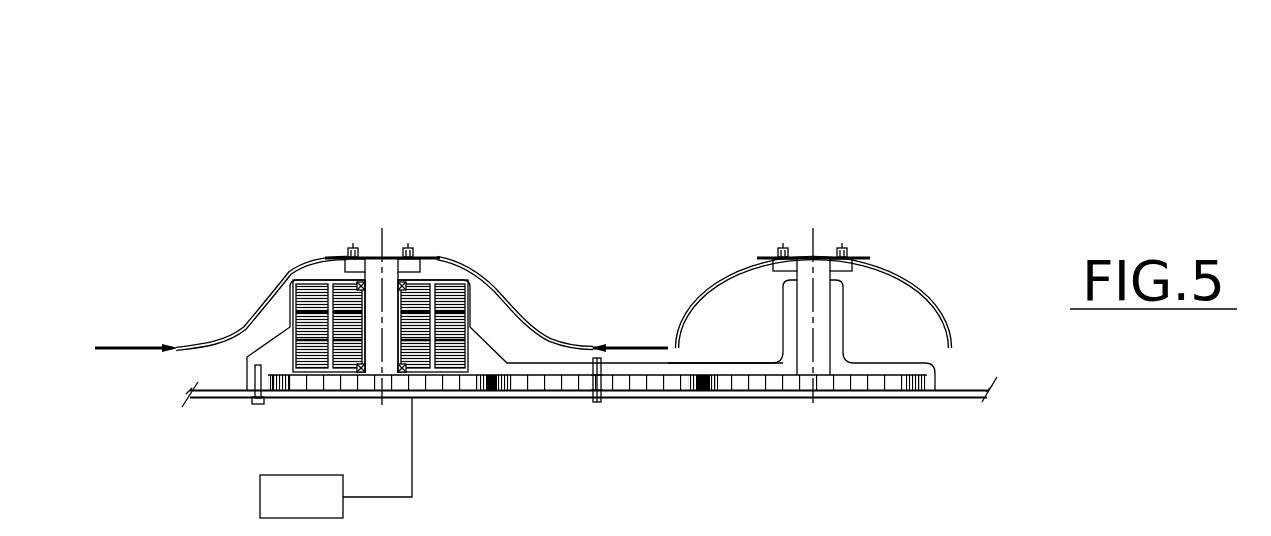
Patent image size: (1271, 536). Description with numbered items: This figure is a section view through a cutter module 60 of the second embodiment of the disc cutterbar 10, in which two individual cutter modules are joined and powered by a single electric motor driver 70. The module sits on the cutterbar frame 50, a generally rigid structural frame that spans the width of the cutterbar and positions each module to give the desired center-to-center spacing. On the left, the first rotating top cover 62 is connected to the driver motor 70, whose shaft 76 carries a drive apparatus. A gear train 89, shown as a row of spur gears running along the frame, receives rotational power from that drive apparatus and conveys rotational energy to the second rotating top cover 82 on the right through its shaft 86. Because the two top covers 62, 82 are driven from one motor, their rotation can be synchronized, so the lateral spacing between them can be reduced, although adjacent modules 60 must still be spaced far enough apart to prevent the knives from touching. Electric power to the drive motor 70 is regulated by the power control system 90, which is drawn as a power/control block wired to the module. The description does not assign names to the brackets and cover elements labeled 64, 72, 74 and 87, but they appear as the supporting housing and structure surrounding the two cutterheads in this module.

The disc cutterbar 10 is at (813, 535).
The cutterbar frame 50 is at (912, 400).
The cutter module 60 is at (620, 140).
The first rotating top cover 62 is at (415, 290).
The mounting bracket 64 is at (630, 365).
The electric motor driver 70 is at (275, 421).
The right cover 72 is at (457, 307).
The hub 74 is at (444, 258).
The shaft 76 is at (328, 257).
The second rotating top cover 82 is at (858, 258).
The shaft 86 is at (830, 320).
The support bracket 87 is at (792, 383).
The gear train 89 is at (577, 385).
The power control system 90 is at (260, 502).